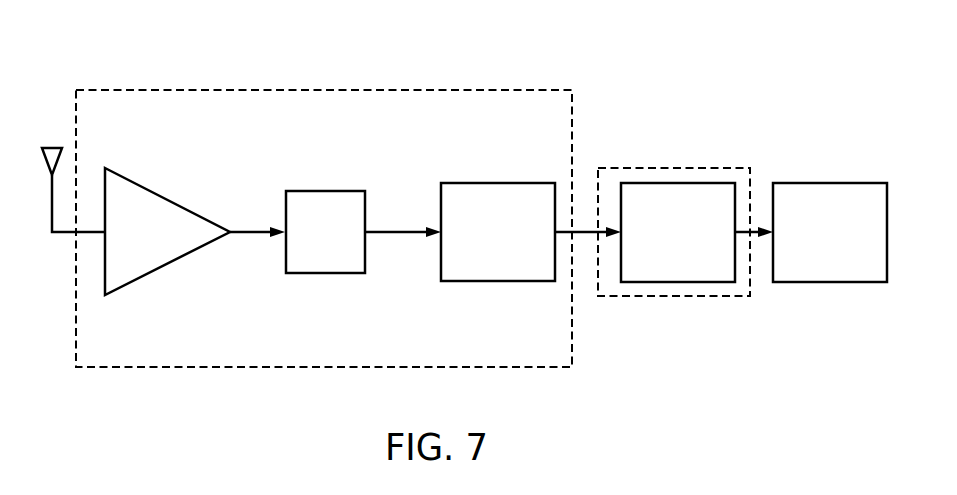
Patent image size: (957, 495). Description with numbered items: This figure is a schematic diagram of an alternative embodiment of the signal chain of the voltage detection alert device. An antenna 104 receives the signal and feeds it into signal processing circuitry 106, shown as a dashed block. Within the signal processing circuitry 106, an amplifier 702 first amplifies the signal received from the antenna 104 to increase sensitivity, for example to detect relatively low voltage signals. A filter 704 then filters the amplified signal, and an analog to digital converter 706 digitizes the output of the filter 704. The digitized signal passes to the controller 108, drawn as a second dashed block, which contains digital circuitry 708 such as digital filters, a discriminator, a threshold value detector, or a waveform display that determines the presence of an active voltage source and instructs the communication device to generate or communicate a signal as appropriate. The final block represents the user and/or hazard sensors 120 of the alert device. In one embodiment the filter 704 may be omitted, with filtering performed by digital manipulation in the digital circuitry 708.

The antenna 104 is at (50, 146).
The signal processing circuitry 106 is at (333, 90).
The controller 108 is at (683, 168).
The sensors 120 is at (828, 183).
The amplifier 702 is at (166, 190).
The filter 704 is at (323, 191).
The analog to digital converter 706 is at (497, 183).
The digital circuitry 708 is at (680, 282).